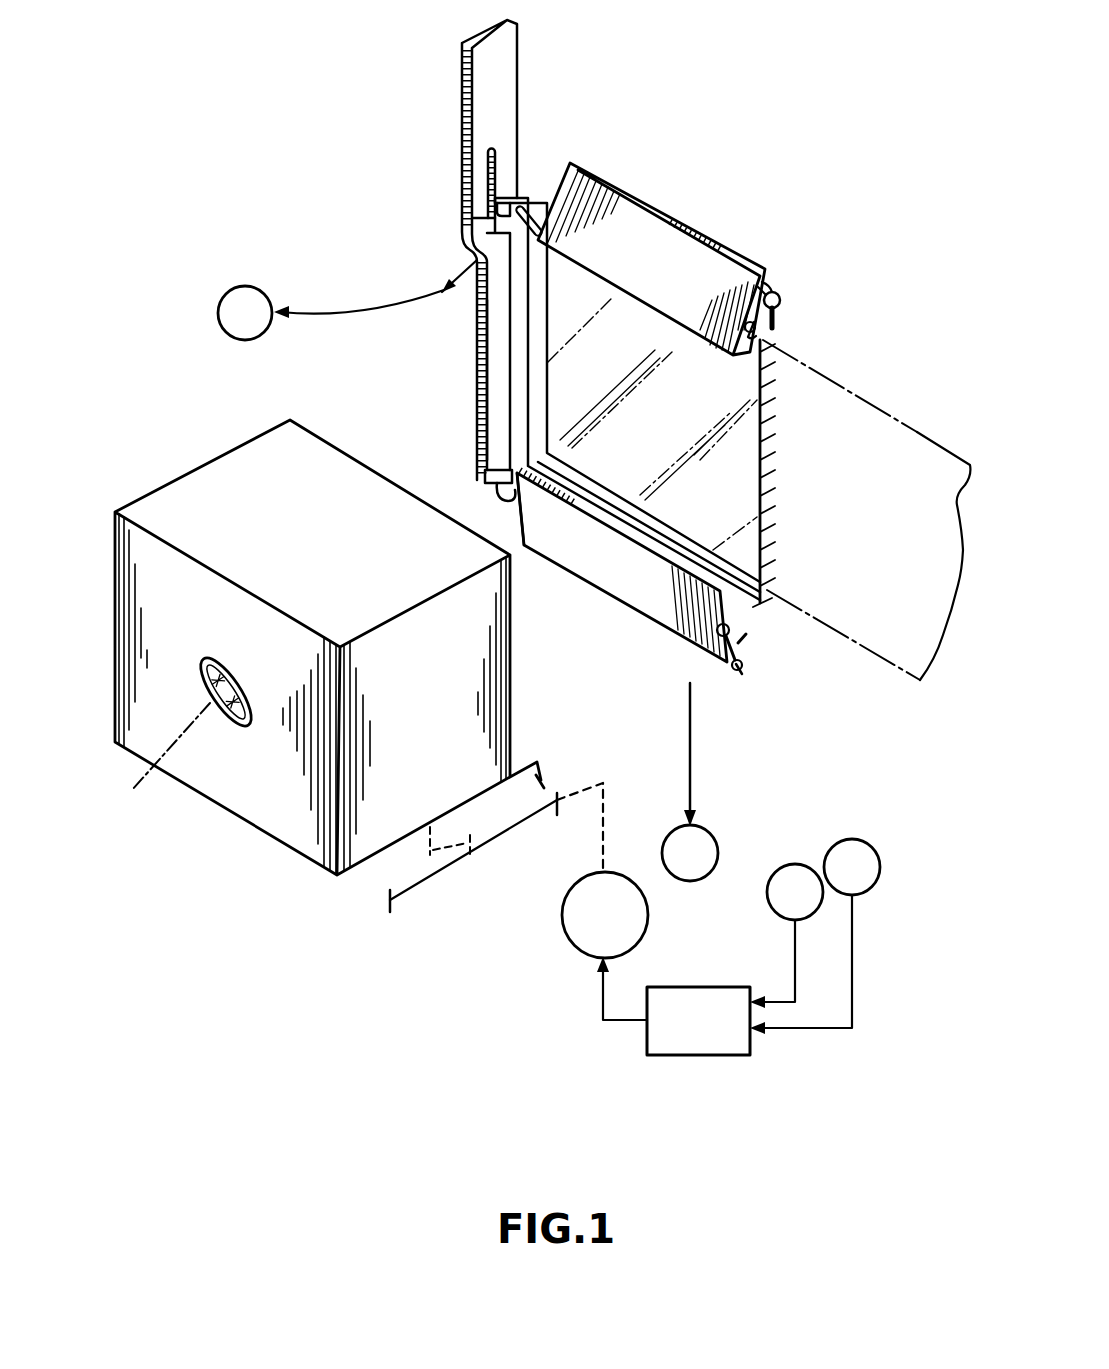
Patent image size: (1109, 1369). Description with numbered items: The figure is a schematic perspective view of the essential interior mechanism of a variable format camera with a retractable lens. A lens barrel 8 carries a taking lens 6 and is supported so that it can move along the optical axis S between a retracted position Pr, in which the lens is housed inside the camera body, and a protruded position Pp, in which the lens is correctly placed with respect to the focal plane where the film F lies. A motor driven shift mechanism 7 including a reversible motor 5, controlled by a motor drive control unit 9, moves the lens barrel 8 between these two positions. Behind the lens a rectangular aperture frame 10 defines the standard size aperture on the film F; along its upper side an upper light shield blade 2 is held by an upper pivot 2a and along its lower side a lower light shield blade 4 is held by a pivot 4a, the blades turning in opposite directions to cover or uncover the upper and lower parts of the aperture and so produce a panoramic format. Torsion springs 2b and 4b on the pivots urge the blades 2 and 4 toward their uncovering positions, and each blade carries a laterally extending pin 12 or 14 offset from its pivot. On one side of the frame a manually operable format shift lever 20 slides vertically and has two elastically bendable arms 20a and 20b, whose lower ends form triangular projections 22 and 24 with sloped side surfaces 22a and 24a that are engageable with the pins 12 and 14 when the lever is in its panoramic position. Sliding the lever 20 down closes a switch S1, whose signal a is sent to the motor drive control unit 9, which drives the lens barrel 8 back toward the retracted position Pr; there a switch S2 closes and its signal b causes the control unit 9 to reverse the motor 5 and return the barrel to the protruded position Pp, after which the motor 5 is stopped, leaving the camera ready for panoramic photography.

The upper light shield blade 2 is at (637, 233).
The upper pivot 2a is at (776, 292).
The torsion spring 2b is at (780, 318).
The lower light shield blade 4 is at (613, 590).
The pivot 4a is at (730, 680).
The torsion spring 4b is at (740, 655).
The motor 5 is at (567, 947).
The taking lens 6 is at (223, 730).
The motor driven shift mechanism 7 is at (443, 873).
The lens barrel 8 is at (210, 477).
The motor drive control unit 9 is at (693, 1057).
The aperture frame 10 is at (730, 497).
The pin 12 is at (534, 200).
The pin 14 is at (510, 498).
The format shift lever 20 is at (505, 97).
The bendable arm 20a is at (496, 171).
The bendable arm 20b is at (493, 373).
The projection 22 is at (520, 197).
The side surface 22a is at (507, 210).
The projection 24 is at (490, 468).
The side surface 24a is at (477, 477).
The film F is at (920, 433).
The optical axis S is at (159, 759).
The switch S1 is at (444, 282).
The switch S2 is at (687, 697).
The signal a is at (520, 647).
The signal b is at (771, 929).
The protruded position Pp is at (390, 912).
The retracted position Pr is at (557, 815).